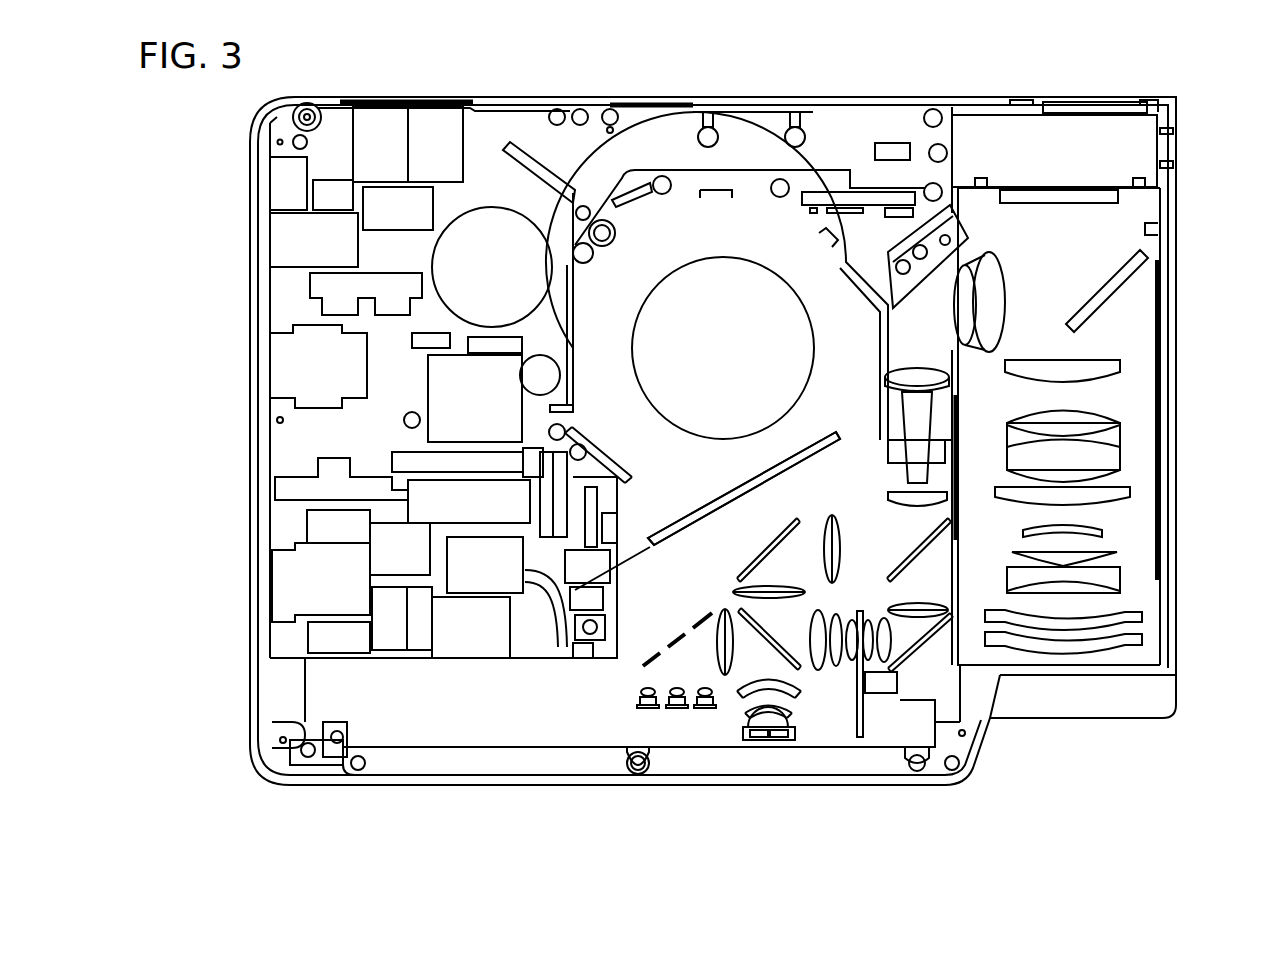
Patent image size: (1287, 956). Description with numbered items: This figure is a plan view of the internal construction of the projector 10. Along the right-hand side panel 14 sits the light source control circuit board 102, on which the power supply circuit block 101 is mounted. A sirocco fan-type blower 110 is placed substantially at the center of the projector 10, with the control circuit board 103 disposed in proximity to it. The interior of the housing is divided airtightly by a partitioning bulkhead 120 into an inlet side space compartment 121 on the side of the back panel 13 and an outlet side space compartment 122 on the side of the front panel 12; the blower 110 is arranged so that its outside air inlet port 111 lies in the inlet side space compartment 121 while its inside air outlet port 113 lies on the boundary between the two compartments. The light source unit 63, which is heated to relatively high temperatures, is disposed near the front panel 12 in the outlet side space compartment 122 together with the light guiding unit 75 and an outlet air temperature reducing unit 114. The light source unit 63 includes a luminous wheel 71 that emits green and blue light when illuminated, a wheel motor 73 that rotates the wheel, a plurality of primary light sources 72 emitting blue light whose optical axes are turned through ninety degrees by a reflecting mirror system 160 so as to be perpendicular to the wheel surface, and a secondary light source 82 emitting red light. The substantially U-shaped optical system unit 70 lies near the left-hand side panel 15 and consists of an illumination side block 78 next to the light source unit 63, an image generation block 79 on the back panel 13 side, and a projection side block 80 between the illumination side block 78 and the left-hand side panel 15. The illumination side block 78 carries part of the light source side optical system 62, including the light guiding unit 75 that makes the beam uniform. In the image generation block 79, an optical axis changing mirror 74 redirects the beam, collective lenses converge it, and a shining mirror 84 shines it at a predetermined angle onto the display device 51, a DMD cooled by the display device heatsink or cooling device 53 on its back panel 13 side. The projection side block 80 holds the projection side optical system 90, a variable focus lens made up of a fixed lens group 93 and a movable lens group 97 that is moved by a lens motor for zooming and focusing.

The projector 10 is at (1180, 92).
The front panel 12 is at (507, 785).
The back panel 13 is at (523, 102).
The right-hand side panel 14 is at (252, 487).
The left-hand side panel 15 is at (1173, 236).
The display device 51 is at (1085, 195).
The display device heatsink or cooling device 53 is at (990, 145).
The light source side optical system 62 is at (913, 355).
The light source unit 63 is at (914, 679).
The optical system unit 70 is at (1122, 340).
The luminous wheel 71 is at (851, 720).
The primary light sources 72 is at (677, 707).
The wheel motor 73 is at (882, 693).
The optical axis changing mirror 74 is at (907, 272).
The light guiding unit 75 is at (832, 233).
The illumination side block 78 is at (944, 407).
The image generation block 79 is at (972, 210).
The projection side block 80 is at (1120, 558).
The secondary light source 82 is at (768, 737).
The shining mirror 84 is at (1108, 291).
The projection side optical system 90 is at (1120, 507).
The fixed lens group 93 is at (1130, 626).
The movable lens group 97 is at (1105, 438).
The power supply circuit block 101 is at (300, 248).
The light source control circuit board 102 is at (295, 530).
The control circuit board 103 is at (603, 147).
The sirocco fan-type blower 110 is at (692, 225).
The outside air inlet port 111 is at (745, 290).
The inside air outlet port 113 is at (692, 527).
The outlet air temperature reducing unit 114 is at (470, 758).
The partitioning bulkhead 120 is at (322, 668).
The inlet side space compartment 121 is at (658, 140).
The outlet side space compartment 122 is at (438, 728).
The reflecting mirror system 160 is at (652, 672).